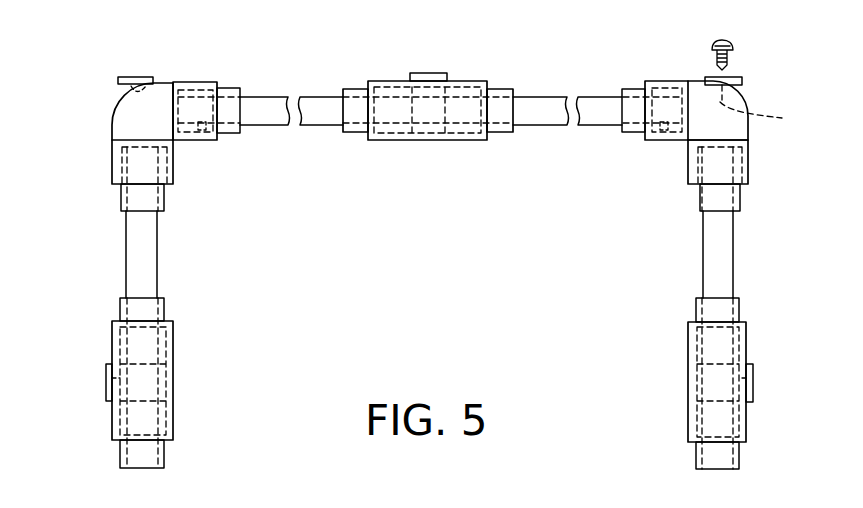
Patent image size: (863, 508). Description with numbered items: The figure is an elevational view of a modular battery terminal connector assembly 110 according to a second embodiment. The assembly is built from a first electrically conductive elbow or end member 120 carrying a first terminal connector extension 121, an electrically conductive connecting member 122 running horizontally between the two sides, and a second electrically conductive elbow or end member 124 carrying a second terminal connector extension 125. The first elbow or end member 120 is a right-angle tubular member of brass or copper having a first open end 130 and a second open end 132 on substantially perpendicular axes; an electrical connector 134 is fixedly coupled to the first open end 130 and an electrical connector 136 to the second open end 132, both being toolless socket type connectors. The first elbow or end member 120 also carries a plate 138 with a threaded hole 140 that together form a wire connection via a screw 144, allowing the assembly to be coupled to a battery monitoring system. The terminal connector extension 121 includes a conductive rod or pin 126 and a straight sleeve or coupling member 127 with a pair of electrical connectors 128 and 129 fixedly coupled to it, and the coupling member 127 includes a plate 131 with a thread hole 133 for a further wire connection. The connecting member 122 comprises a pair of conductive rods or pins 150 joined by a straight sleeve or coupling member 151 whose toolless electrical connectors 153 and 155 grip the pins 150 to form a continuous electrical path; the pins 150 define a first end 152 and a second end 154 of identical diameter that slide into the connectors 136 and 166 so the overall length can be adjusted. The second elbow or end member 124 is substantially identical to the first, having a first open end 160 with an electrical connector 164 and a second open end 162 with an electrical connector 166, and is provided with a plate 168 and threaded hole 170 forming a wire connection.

The modular battery terminal connector assembly 110 is at (550, 92).
The first electrically conductive elbow or end member 120 is at (696, 80).
The first electrically conductive terminal connector extension 121 is at (681, 321).
The electrically conductive connecting member 122 is at (425, 119).
The second electrically conductive elbow or end member 124 is at (165, 81).
The second electrically conductive terminal connector extension 125 is at (428, 371).
The electrically conductive rod or pin 126 is at (158, 253).
The straight sleeve or coupling member 127 is at (173, 391).
The electrical connector 128 is at (164, 311).
The electrical connector 129 is at (165, 459).
The first open end 130 is at (703, 214).
The plate 131 is at (107, 401).
The second open end 132 is at (623, 128).
The thread hole 133 is at (104, 384).
The electrical connector 134 is at (740, 193).
The electrical connector 136 is at (633, 89).
The plate 138 is at (742, 79).
The threaded hole 140 is at (776, 108).
The screw 144 is at (733, 48).
The rod or pin 150 is at (274, 97).
The straight sleeve or coupling member 151 is at (420, 140).
The first end 152 is at (663, 128).
The toolless electrical connector 153 is at (502, 89).
The second end 154 is at (200, 128).
The toolless electrical connector 155 is at (353, 89).
The first open end 160 is at (162, 213).
The second open end 162 is at (218, 81).
The electrical connector 164 is at (121, 193).
The electrical connector 166 is at (238, 131).
The plate 168 is at (118, 79).
The threaded hole 170 is at (137, 93).